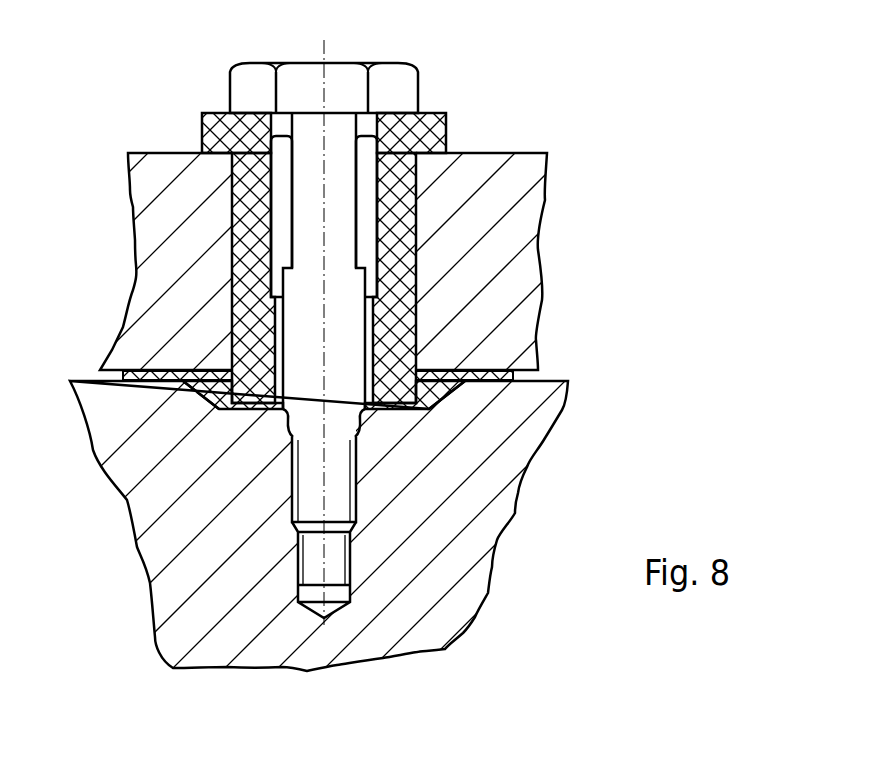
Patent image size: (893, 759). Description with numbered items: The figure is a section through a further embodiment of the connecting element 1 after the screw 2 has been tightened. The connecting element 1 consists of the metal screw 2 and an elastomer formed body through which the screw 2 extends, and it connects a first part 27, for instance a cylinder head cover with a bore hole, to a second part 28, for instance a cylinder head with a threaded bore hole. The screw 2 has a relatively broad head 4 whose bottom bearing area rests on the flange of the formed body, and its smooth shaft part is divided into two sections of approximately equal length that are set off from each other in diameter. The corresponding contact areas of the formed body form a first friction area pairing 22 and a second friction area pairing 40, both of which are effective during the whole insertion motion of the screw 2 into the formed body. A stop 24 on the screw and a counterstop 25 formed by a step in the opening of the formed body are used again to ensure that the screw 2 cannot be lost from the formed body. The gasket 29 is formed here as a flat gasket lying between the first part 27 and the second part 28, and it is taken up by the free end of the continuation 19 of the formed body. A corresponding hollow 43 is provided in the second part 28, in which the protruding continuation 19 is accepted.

The connecting element 1 is at (424, 60).
The screw 2 is at (345, 200).
The head 4 is at (395, 87).
The continuation 19 is at (210, 390).
The friction area pairing 22 is at (412, 112).
The stop 24 is at (288, 240).
The counterstop 25 is at (270, 151).
The first part 27 is at (158, 226).
The second part 28 is at (468, 452).
The gasket 29 is at (157, 374).
The second friction area pairing 40 is at (398, 251).
The hollow 43 is at (462, 370).